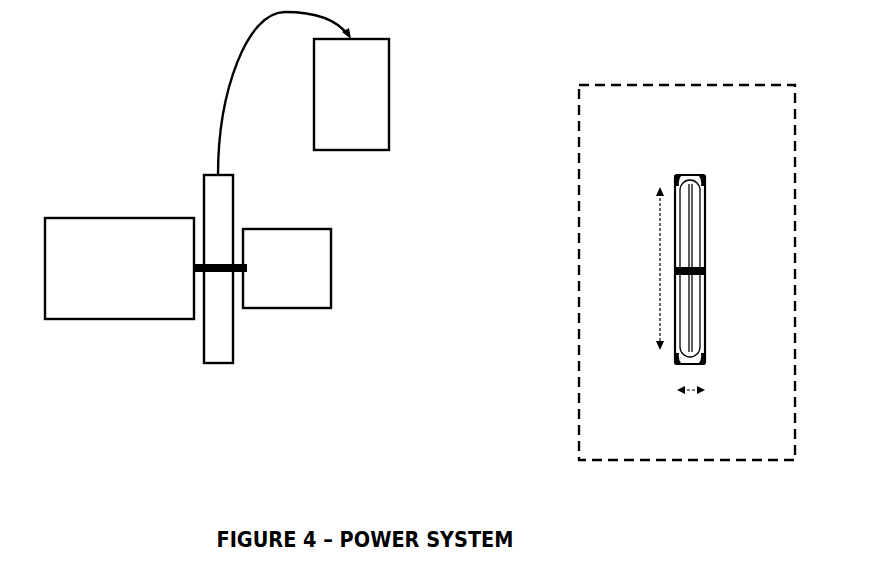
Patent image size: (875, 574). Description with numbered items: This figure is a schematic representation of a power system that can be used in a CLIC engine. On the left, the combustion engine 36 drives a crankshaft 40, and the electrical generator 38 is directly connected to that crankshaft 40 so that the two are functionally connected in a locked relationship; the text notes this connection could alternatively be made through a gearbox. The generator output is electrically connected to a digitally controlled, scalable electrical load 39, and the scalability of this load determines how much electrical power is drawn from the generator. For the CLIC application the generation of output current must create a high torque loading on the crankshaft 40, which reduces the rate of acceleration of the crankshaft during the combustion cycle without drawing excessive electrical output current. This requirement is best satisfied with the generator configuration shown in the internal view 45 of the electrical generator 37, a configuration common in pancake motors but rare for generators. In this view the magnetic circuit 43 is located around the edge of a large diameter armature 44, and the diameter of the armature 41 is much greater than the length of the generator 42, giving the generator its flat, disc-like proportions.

The combustion engine 36 is at (119, 210).
The electrical generator 37 is at (216, 367).
The electrical generator 38 is at (336, 266).
The electrical load 39 is at (395, 92).
The crankshaft 40 is at (243, 270).
The diameter of the armature 41 is at (639, 268).
The length of the generator 42 is at (689, 409).
The magnetic circuit 43 is at (698, 182).
The armature 44 is at (699, 228).
The internal view 45 is at (801, 272).